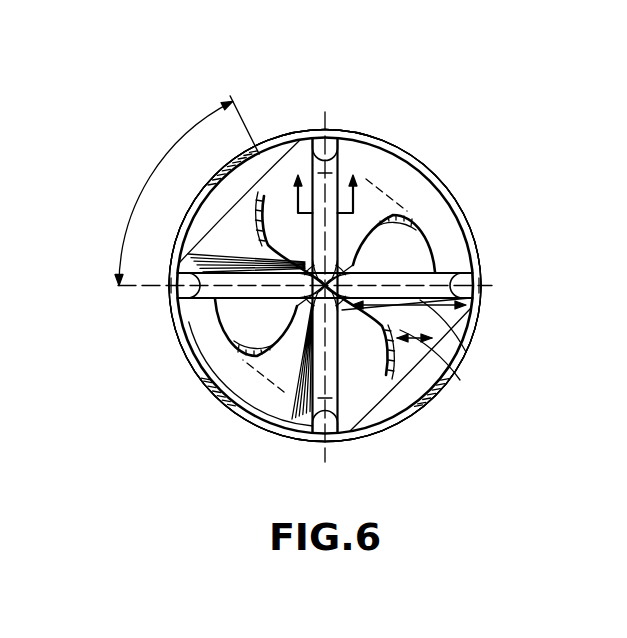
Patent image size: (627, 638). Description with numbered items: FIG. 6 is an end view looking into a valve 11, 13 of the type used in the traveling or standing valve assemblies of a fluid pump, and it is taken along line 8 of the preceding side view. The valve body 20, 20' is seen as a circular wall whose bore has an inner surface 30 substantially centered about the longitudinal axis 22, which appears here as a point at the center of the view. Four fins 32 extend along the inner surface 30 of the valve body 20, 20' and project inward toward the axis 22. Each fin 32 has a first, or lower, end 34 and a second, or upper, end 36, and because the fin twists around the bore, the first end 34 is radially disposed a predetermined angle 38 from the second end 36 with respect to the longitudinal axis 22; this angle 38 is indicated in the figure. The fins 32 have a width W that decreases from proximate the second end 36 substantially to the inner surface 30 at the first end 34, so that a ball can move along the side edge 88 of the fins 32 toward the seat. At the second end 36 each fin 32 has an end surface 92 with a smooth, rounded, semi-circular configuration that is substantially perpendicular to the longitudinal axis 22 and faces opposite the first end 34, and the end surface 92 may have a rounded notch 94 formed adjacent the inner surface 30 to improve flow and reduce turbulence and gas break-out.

The section line 8- 8 is at (323, 181).
The valve 11 is at (505, 312).
The valve 13 is at (325, 286).
The valve body 20 is at (355, 286).
The valve body 20' is at (325, 286).
The longitudinal axis 22 is at (312, 305).
The inner surface 30 is at (466, 216).
The fin 32 is at (392, 210).
The first end 34 is at (278, 176).
The second end 36 is at (186, 284).
The predetermined angle 38 is at (187, 191).
The side edge 88 is at (404, 222).
The end surface 92 is at (398, 275).
The rounded notch 94 is at (461, 278).
The width W is at (438, 372).